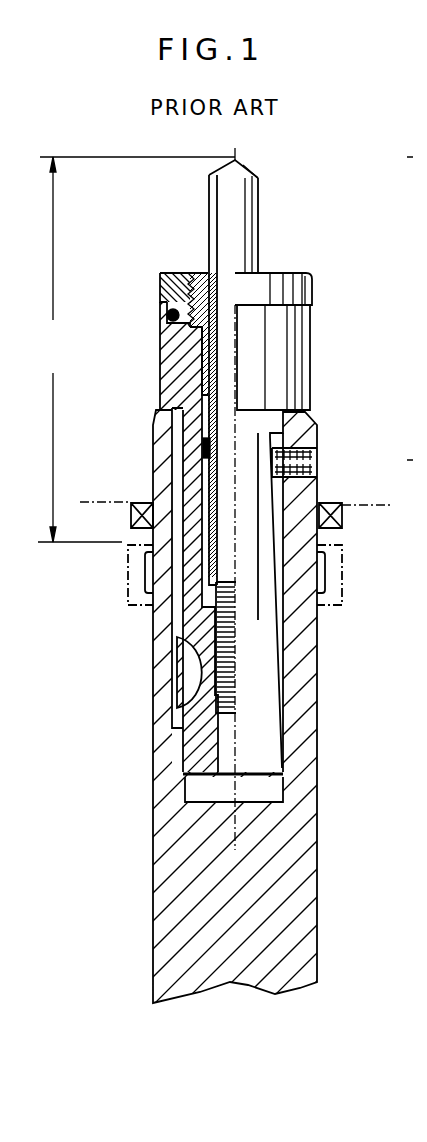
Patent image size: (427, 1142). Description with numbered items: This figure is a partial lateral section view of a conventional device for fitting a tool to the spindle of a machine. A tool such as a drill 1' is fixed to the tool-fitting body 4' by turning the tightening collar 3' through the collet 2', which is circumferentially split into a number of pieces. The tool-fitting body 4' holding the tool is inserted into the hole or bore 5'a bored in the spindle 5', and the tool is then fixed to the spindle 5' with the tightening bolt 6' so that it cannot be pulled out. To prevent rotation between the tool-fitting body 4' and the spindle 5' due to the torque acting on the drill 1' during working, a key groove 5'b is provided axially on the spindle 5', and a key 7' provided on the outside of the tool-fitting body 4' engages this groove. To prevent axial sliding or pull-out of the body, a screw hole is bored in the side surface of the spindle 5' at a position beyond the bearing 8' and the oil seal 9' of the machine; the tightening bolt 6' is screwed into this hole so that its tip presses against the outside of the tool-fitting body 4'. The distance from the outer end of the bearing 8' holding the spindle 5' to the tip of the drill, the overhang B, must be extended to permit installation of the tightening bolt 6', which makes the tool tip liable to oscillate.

The drill 1' is at (213, 425).
The collet 2' is at (213, 326).
The tightening collar 3' is at (213, 330).
The tool-fitting body 4' is at (213, 495).
The spindle 5' is at (213, 571).
The hole or bore 5'a is at (167, 793).
The key groove 5'b is at (124, 563).
The tightening bolt 6' is at (322, 589).
The key 7' is at (138, 672).
The bearing 8' is at (208, 582).
The oil seal 9' is at (233, 498).
The overhang B is at (225, 345).